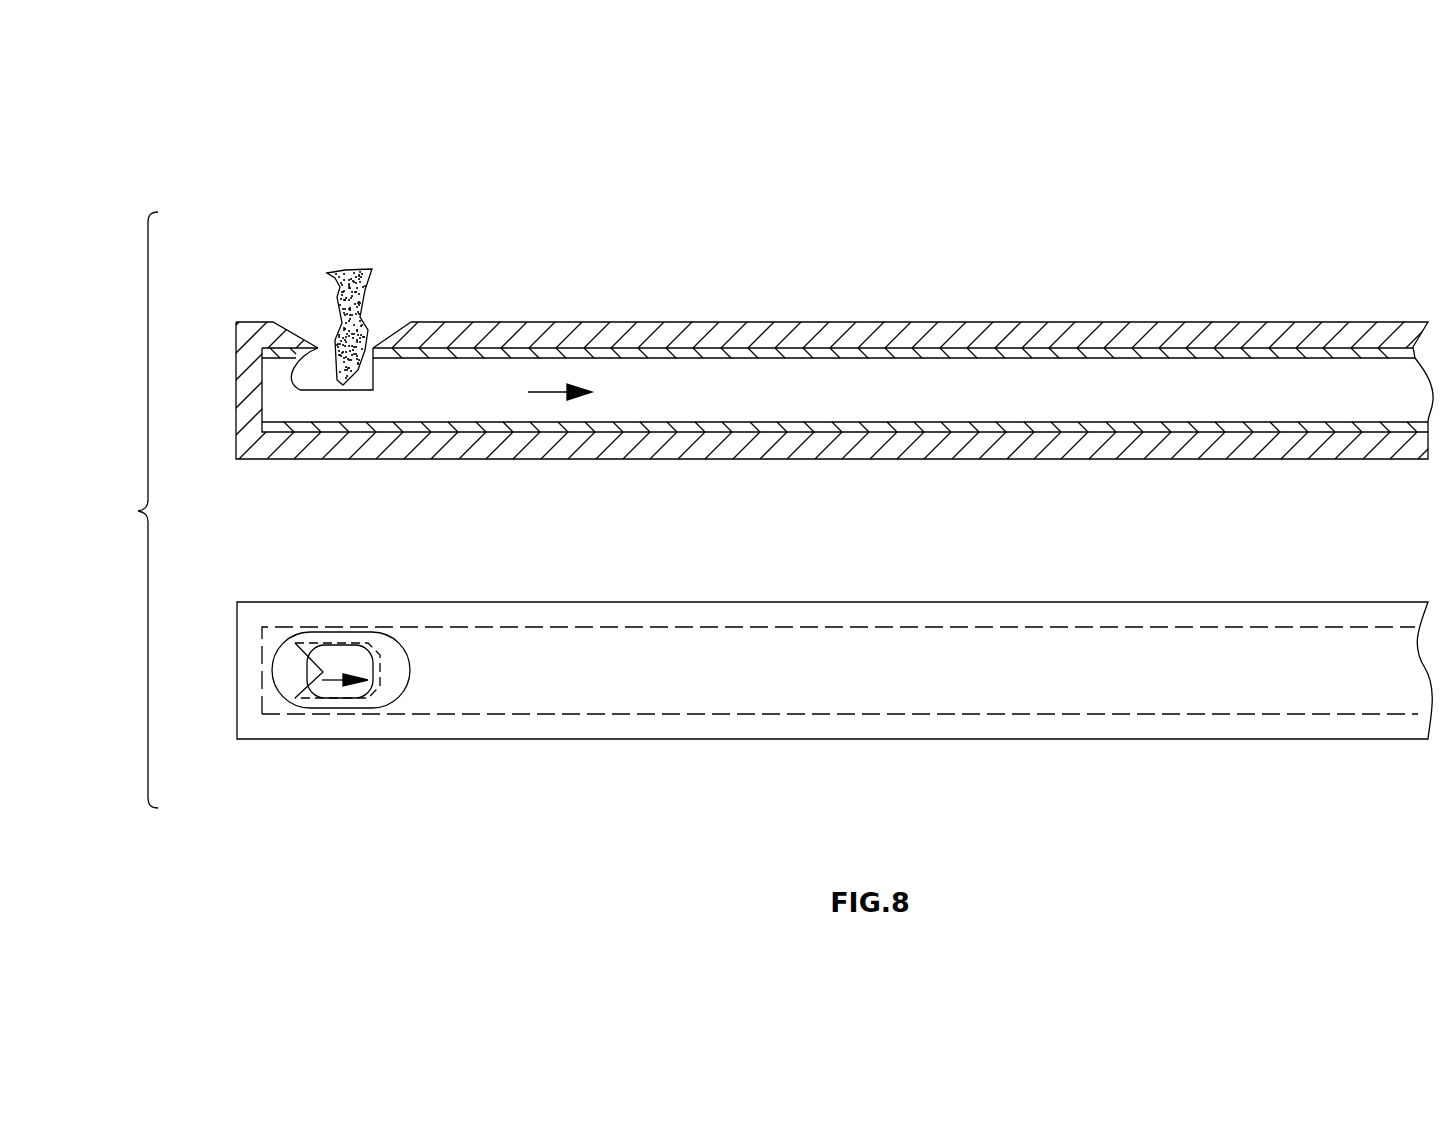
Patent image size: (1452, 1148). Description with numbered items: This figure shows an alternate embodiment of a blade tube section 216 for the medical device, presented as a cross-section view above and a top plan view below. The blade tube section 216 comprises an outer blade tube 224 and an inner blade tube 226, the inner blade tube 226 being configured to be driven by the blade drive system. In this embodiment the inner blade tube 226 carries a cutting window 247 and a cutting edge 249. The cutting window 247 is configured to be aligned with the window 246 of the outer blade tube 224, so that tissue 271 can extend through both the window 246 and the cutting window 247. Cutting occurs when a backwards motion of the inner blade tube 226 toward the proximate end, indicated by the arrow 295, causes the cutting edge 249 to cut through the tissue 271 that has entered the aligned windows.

The blade tube section 216 is at (1124, 186).
The outer blade tube 224 is at (700, 322).
The inner blade tube 226 is at (1278, 350).
The window 246 is at (273, 322).
The cutting window 247 is at (373, 380).
The cutting edge 249 is at (318, 350).
The tissue 271 is at (352, 270).
The arrow 295 is at (548, 392).